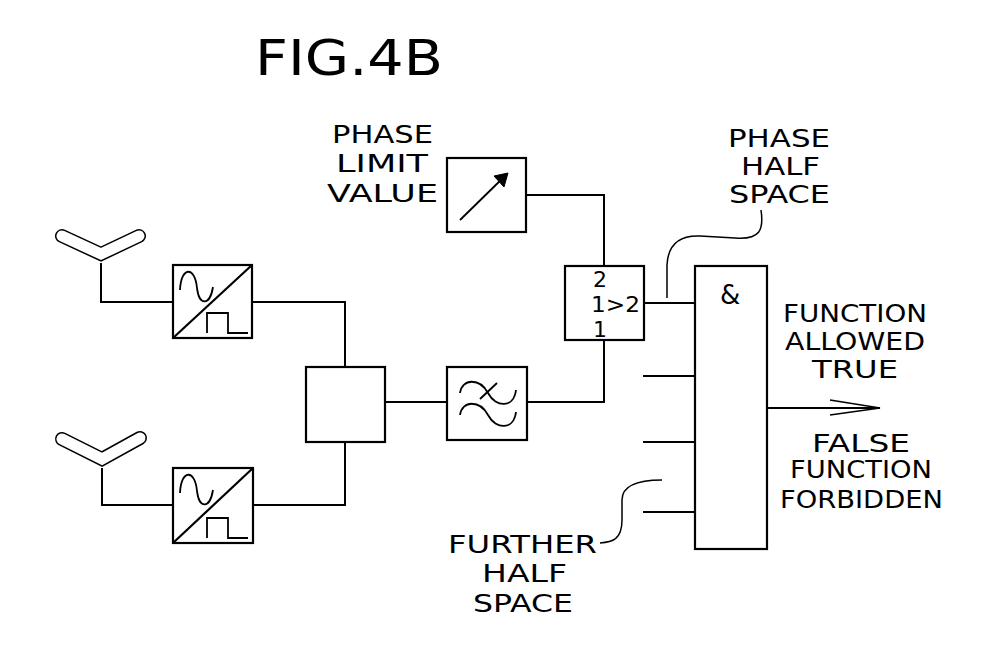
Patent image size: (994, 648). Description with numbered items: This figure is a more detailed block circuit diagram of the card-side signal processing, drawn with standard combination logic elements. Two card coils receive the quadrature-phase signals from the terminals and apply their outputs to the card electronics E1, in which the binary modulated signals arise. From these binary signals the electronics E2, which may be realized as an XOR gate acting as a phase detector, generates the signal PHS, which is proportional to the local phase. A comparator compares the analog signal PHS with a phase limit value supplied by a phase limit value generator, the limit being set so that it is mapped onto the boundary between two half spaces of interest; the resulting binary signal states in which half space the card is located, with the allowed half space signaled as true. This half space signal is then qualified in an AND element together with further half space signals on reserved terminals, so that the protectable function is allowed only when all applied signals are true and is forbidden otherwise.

The card electronics E1 is at (213, 404).
The electronics E2 is at (376, 436).
The signal PHS is at (525, 390).